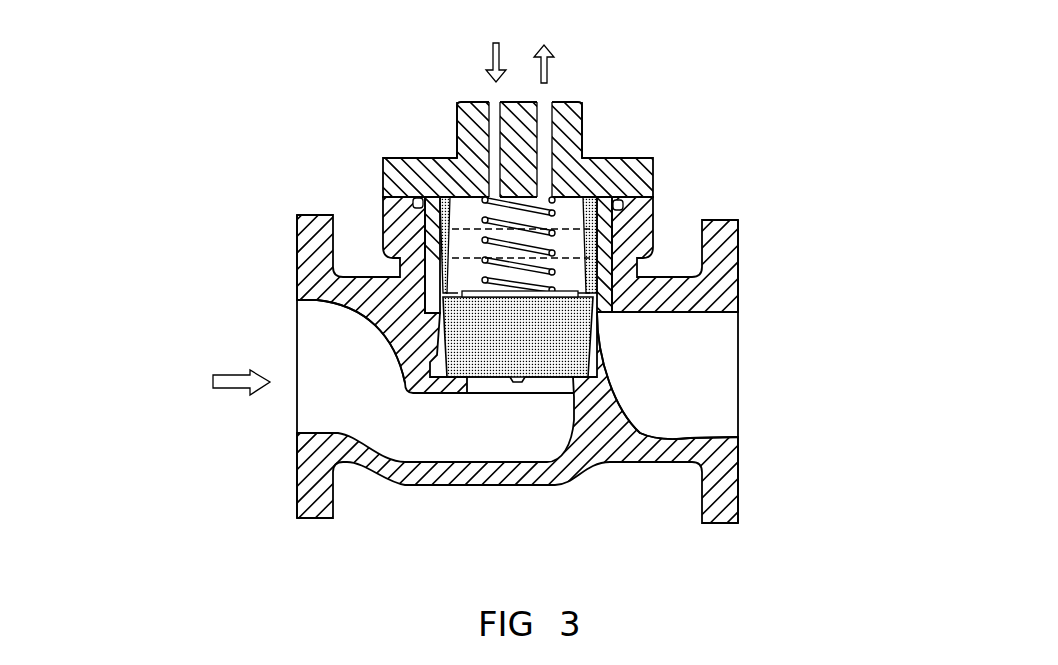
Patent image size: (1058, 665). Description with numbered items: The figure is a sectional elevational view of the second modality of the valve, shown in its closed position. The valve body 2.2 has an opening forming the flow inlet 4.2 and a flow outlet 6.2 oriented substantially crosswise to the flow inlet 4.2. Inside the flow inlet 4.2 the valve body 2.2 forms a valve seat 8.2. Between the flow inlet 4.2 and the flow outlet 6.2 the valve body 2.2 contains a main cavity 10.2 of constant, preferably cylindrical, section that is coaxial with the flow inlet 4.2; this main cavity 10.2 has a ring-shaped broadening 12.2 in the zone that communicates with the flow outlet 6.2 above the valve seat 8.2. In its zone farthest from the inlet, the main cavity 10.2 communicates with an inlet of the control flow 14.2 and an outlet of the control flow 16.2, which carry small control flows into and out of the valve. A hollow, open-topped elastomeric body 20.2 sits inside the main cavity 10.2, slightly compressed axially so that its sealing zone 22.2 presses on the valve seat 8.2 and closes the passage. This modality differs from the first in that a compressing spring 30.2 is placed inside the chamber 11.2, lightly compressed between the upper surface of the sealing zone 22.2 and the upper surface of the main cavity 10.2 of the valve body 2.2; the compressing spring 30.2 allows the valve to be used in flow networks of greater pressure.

The valve body 2.2 is at (368, 218).
The flow inlet 4.2 is at (463, 430).
The flow outlet 6.2 is at (610, 393).
The valve seat 8.2 is at (535, 393).
The main cavity 10.2 is at (597, 316).
The chamber 11.2 is at (577, 213).
The ring-shaped broadening 12.2 is at (433, 340).
The inlet of the control flow 14.2 is at (495, 107).
The outlet of the control flow 16.2 is at (545, 110).
The elastomeric body 20.2 is at (567, 338).
The sealing zone 22.2 is at (567, 363).
The compressing spring 30.2 is at (445, 200).